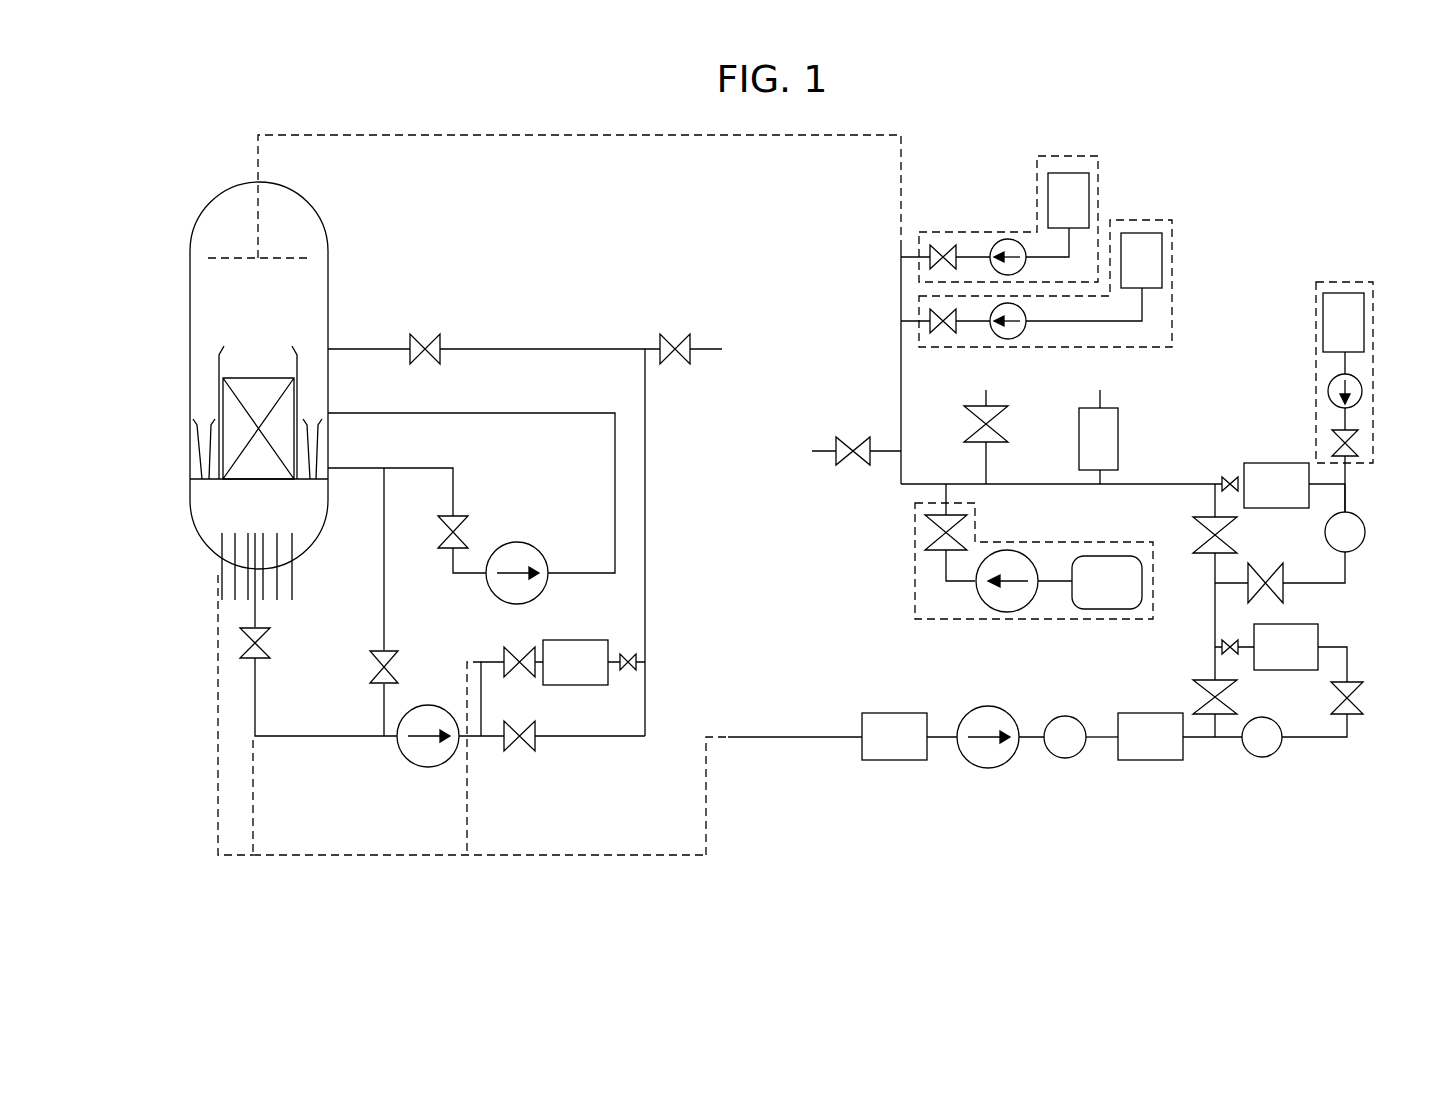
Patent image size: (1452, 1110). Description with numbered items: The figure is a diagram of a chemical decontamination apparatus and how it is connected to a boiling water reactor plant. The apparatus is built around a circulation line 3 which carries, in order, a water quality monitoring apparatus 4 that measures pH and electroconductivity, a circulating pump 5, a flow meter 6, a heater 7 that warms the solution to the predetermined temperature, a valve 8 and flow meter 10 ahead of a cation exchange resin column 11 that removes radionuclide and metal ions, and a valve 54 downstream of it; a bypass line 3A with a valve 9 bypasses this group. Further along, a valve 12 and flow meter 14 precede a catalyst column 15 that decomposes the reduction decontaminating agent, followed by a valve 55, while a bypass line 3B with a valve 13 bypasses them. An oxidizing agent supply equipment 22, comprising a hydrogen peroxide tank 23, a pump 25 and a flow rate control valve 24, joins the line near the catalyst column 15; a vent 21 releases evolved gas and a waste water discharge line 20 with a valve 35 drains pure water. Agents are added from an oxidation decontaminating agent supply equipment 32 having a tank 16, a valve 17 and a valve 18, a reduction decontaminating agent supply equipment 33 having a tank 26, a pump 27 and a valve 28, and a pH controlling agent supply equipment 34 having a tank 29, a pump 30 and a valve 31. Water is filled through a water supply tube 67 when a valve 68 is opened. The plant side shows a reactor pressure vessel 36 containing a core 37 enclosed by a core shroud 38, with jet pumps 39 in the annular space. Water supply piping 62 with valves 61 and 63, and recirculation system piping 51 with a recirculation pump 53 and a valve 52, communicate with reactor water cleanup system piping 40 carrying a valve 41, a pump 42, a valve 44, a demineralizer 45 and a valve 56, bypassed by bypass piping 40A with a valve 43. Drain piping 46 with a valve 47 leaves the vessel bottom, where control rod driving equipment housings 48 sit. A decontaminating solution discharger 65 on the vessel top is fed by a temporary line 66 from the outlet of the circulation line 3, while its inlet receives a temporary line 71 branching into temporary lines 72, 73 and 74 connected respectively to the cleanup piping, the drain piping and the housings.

The circulation line 3 is at (805, 738).
The bypass line 3A is at (1215, 655).
The bypass line 3B is at (1217, 568).
The water quality monitoring apparatus 4 is at (893, 760).
The circulating pump 5 is at (987, 768).
The flow meter 6 is at (1066, 758).
The heater 7 is at (1148, 760).
The valve 8 is at (1363, 700).
The valve 9 is at (1193, 697).
The flow meter 10 is at (1262, 757).
The cation exchange resin column 11 is at (1318, 632).
The valve 12 is at (1248, 600).
The valve 13 is at (1198, 540).
The flow meter 14 is at (1366, 525).
The catalyst column 15 is at (1272, 463).
The oxidation decontaminating agent tank 16 is at (1100, 609).
The valve 17 is at (1007, 612).
The valve 18 is at (930, 548).
The waste water discharge line 20 is at (986, 462).
The vent 21 is at (1118, 420).
The oxidizing agent supply equipment 22 is at (1340, 282).
The hydrogen peroxide tank 23 is at (1364, 315).
The flow rate control valve 24 is at (1358, 447).
The pump 25 is at (1362, 388).
The reduction decontaminating agent tank 26 is at (1162, 272).
The pump 27 is at (1010, 339).
The valve 28 is at (943, 333).
The pH controlling agent tank 29 is at (1089, 200).
The pump 30 is at (1008, 239).
The valve 31 is at (943, 245).
The oxidation decontaminating agent supply equipment 32 is at (950, 619).
The reduction decontaminating agent supply equipment 33 is at (1172, 240).
The pH controlling agent supply equipment 34 is at (1060, 156).
The valve 35 is at (964, 424).
The reactor pressure vessel 36 is at (190, 418).
The core 37 is at (228, 403).
The core shroud 38 is at (297, 384).
The jet pump 39 is at (313, 445).
The reactor water cleanup system piping 40 is at (384, 595).
The bypass piping 40A is at (645, 712).
The valve 41 is at (384, 645).
The pump 42 is at (407, 762).
The valve 43 is at (535, 742).
The valve 44 is at (504, 650).
The demineralizer 45 is at (575, 640).
The drain piping 46 is at (255, 703).
The valve 47 is at (268, 652).
The control rod driving equipment housing 48 is at (220, 585).
The recirculation system piping 51 is at (455, 478).
The valve 52 is at (468, 530).
The recirculation pump 53 is at (530, 541).
The valve 54 is at (1228, 655).
The valve 55 is at (1230, 475).
The valve 56 is at (630, 648).
The valve 61 is at (425, 340).
The water supply piping 62 is at (513, 347).
The valve 63 is at (673, 340).
The decontaminating solution discharger 65 is at (278, 262).
The temporary line 66 is at (853, 137).
The water supply tube 67 is at (815, 455).
The valve 68 is at (860, 465).
The temporary line 71 is at (520, 855).
The temporary line 72 is at (467, 803).
The temporary line 73 is at (253, 790).
The temporary line 74 is at (218, 720).